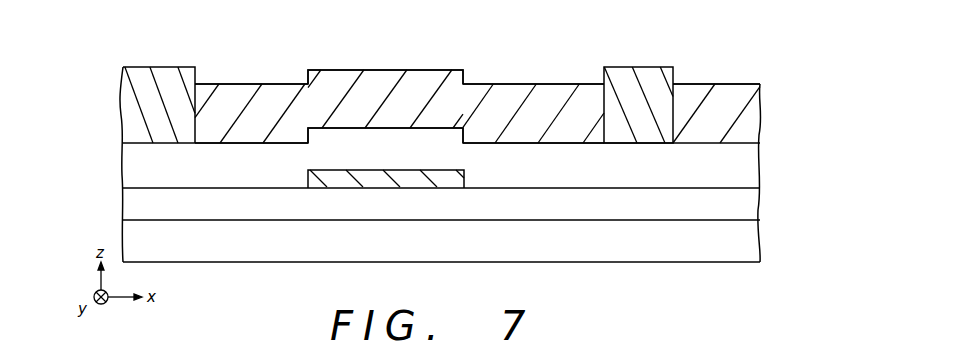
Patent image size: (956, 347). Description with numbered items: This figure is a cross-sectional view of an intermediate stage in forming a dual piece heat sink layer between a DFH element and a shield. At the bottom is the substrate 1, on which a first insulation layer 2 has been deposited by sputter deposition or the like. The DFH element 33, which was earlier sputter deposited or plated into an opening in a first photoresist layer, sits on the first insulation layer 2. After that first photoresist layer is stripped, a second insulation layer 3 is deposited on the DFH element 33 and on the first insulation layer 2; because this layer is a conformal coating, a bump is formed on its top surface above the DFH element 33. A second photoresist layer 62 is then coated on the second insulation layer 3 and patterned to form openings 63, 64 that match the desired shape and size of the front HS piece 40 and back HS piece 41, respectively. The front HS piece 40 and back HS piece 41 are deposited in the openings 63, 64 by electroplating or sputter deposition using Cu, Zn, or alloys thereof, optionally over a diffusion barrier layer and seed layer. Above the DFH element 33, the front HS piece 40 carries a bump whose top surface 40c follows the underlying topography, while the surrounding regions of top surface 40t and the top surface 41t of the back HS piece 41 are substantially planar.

The substrate 1 is at (752, 242).
The first insulation layer 2 is at (757, 200).
The second insulation layer 3 is at (757, 163).
The DFH element 33 is at (327, 182).
The front HS piece 40 is at (233, 90).
The top surface of bump on front HS piece 40c is at (377, 68).
The top surface of front HS piece 40t is at (522, 82).
The back HS piece 41 is at (756, 116).
The top surface of back HS piece 41t is at (732, 83).
The second photoresist layer 62 is at (132, 104).
The opening 63 is at (250, 75).
The opening 64 is at (707, 73).